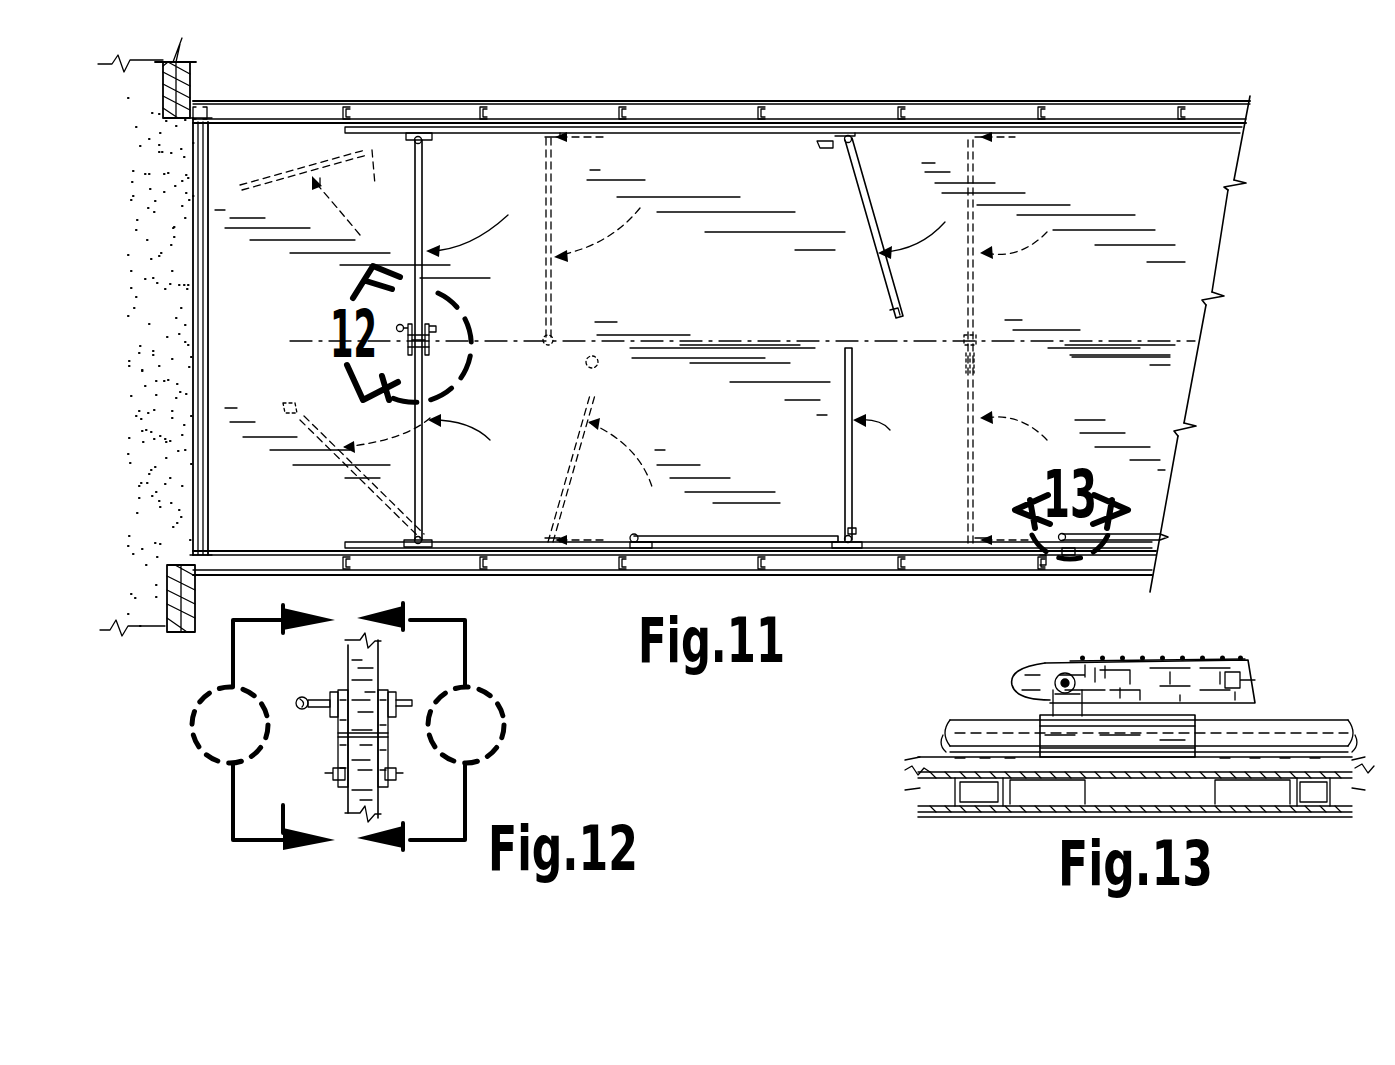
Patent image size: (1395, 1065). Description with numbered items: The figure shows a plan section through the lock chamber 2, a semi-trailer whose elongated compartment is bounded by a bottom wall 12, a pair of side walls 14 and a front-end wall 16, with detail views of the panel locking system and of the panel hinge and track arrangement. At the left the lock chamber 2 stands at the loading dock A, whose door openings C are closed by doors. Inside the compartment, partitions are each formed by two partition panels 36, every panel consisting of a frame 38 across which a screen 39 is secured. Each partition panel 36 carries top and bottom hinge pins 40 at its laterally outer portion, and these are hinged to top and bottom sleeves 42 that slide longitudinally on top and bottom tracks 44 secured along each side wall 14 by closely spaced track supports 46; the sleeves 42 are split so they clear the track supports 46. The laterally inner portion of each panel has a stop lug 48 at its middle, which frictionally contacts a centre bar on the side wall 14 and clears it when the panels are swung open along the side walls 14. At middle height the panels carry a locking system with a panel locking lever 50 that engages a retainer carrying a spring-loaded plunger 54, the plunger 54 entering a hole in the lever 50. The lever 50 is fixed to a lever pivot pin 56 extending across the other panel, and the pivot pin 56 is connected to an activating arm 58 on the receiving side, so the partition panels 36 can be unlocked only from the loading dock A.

In FIG. 11, the lock chamber 2 is at (800, 100).
In FIG. 11, the bottom wall 12 is at (1170, 405).
In FIG. 11, the side walls 14 is at (671, 112).
In FIG. 12, the side walls 14 is at (466, 725).
In FIG. 13, the side walls 14 is at (1258, 800).
In FIG. 12, the front-end wall 16 is at (230, 725).
In FIG. 11, the partition panels 36 is at (371, 182).
In FIG. 12, the partition panels 36 is at (370, 660).
In FIG. 13, the partition panels 36 is at (1223, 660).
In FIG. 13, the frame 38 is at (1241, 675).
In FIG. 13, the screen 39 is at (1151, 660).
In FIG. 11, the hinge pins 40 is at (422, 142).
In FIG. 13, the hinge pins 40 is at (1081, 675).
In FIG. 13, the sleeves 42 is at (1045, 730).
In FIG. 11, the tracks 44 is at (512, 134).
In FIG. 13, the tracks 44 is at (965, 737).
In FIG. 13, the track supports 46 is at (912, 772).
In FIG. 13, the stop lug 48 is at (1031, 670).
In FIG. 11, the panel locking lever 50 is at (410, 342).
In FIG. 12, the panel locking lever 50 is at (340, 735).
In FIG. 12, the spring-loaded plunger 54 is at (295, 698).
In FIG. 12, the lever pivot pin 56 is at (335, 780).
In FIG. 11, the activating arm 58 is at (432, 343).
In FIG. 12, the activating arm 58 is at (388, 740).
In FIG. 11, the loading dock A is at (192, 88).
In FIG. 11, the door openings C is at (170, 556).